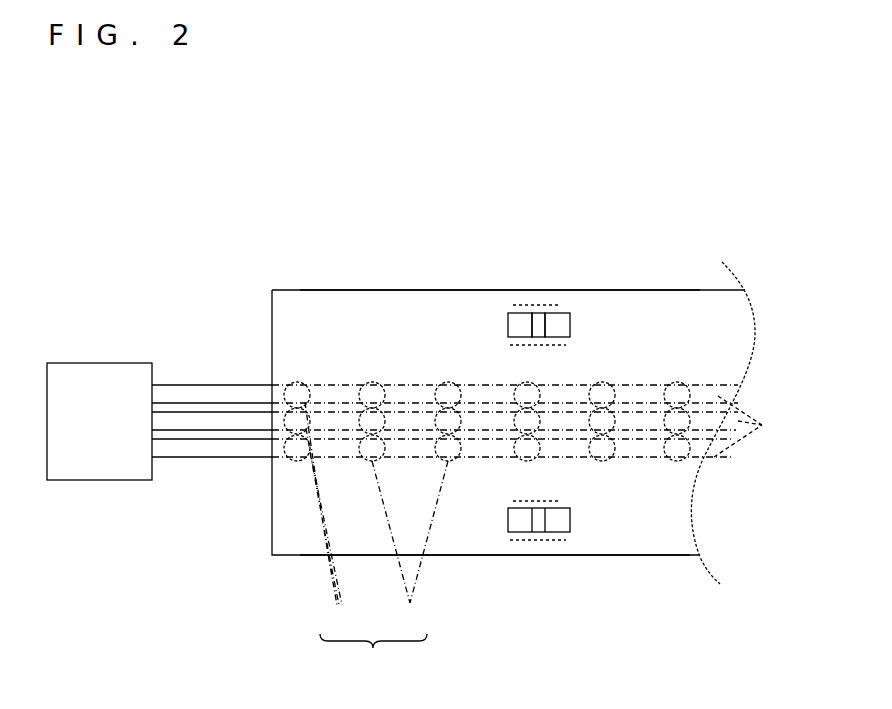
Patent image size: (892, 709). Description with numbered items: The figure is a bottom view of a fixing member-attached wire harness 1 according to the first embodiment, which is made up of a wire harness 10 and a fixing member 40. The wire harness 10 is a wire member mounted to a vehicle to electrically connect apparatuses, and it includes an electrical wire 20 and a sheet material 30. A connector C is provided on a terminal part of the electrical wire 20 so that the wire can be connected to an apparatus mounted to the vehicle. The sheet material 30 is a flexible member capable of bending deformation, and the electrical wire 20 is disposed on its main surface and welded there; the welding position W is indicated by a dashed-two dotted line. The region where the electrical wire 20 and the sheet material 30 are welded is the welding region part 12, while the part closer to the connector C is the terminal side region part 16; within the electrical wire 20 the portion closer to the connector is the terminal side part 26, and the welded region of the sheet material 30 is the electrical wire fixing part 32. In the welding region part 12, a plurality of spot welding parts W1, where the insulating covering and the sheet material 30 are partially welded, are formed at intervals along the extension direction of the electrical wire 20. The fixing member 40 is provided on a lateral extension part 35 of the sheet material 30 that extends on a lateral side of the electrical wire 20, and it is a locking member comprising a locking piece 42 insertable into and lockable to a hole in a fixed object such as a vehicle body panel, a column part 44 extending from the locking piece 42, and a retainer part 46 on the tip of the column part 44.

The fixing member-attached wire harness 1 is at (188, 159).
The wire harness 10 is at (797, 408).
The welding region part 12 is at (367, 381).
The terminal side region part 16 is at (210, 481).
The electrical wire 20 is at (534, 421).
The terminal side part 26 is at (228, 447).
The sheet material 30 is at (680, 487).
The electrical wire fixing part 32 is at (410, 410).
The lateral extension part 35 is at (633, 305).
The fixing member 40 is at (535, 536).
The locking piece 42 is at (515, 308).
The column part 44 is at (540, 310).
The retainer part 46 is at (557, 305).
The connector C is at (57, 427).
The welding position W is at (373, 656).
The spot welding part W1 is at (376, 521).